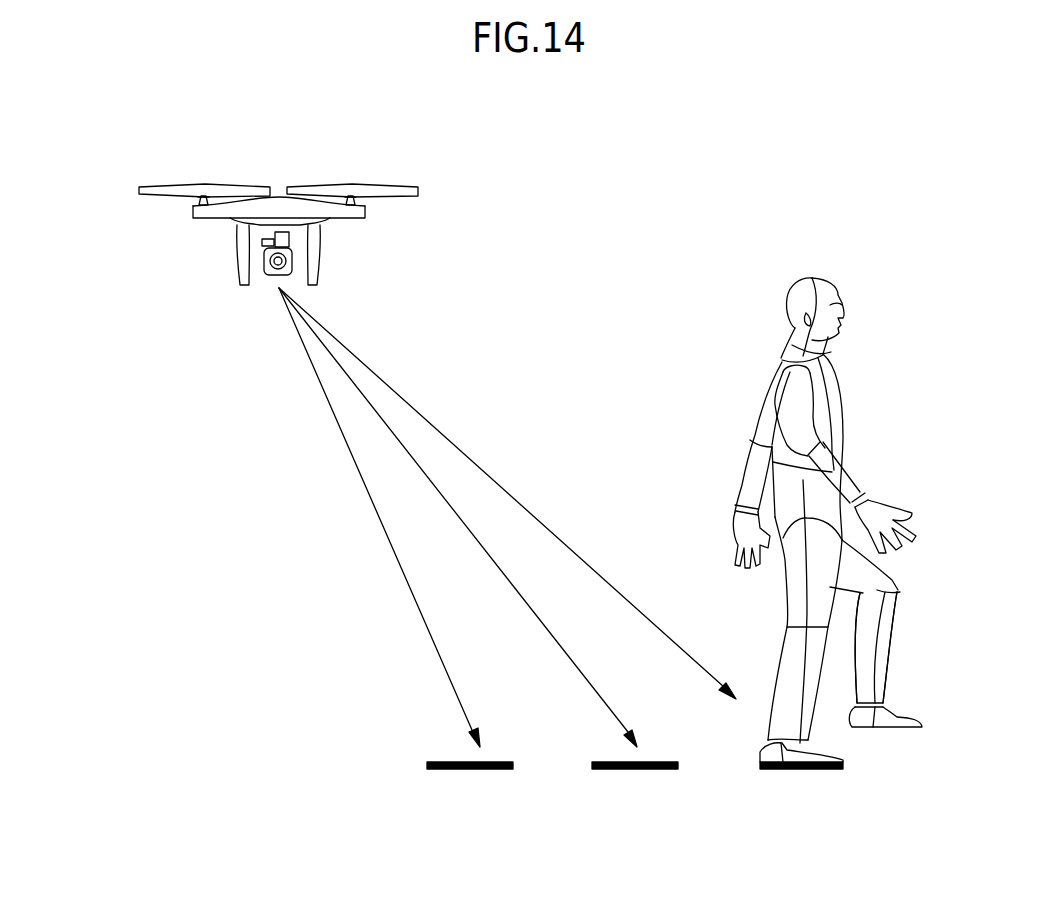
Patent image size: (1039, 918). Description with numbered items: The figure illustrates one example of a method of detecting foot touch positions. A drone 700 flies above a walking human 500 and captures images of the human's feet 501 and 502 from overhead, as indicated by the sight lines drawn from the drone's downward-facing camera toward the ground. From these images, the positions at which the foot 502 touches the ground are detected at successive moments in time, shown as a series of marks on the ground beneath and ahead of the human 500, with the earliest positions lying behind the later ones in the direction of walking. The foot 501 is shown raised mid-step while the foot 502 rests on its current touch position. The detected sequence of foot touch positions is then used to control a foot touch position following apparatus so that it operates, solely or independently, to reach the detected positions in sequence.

The drone 700 is at (411, 187).
The human 500 is at (876, 284).
The foot 501 is at (884, 667).
The foot 502 is at (474, 771).